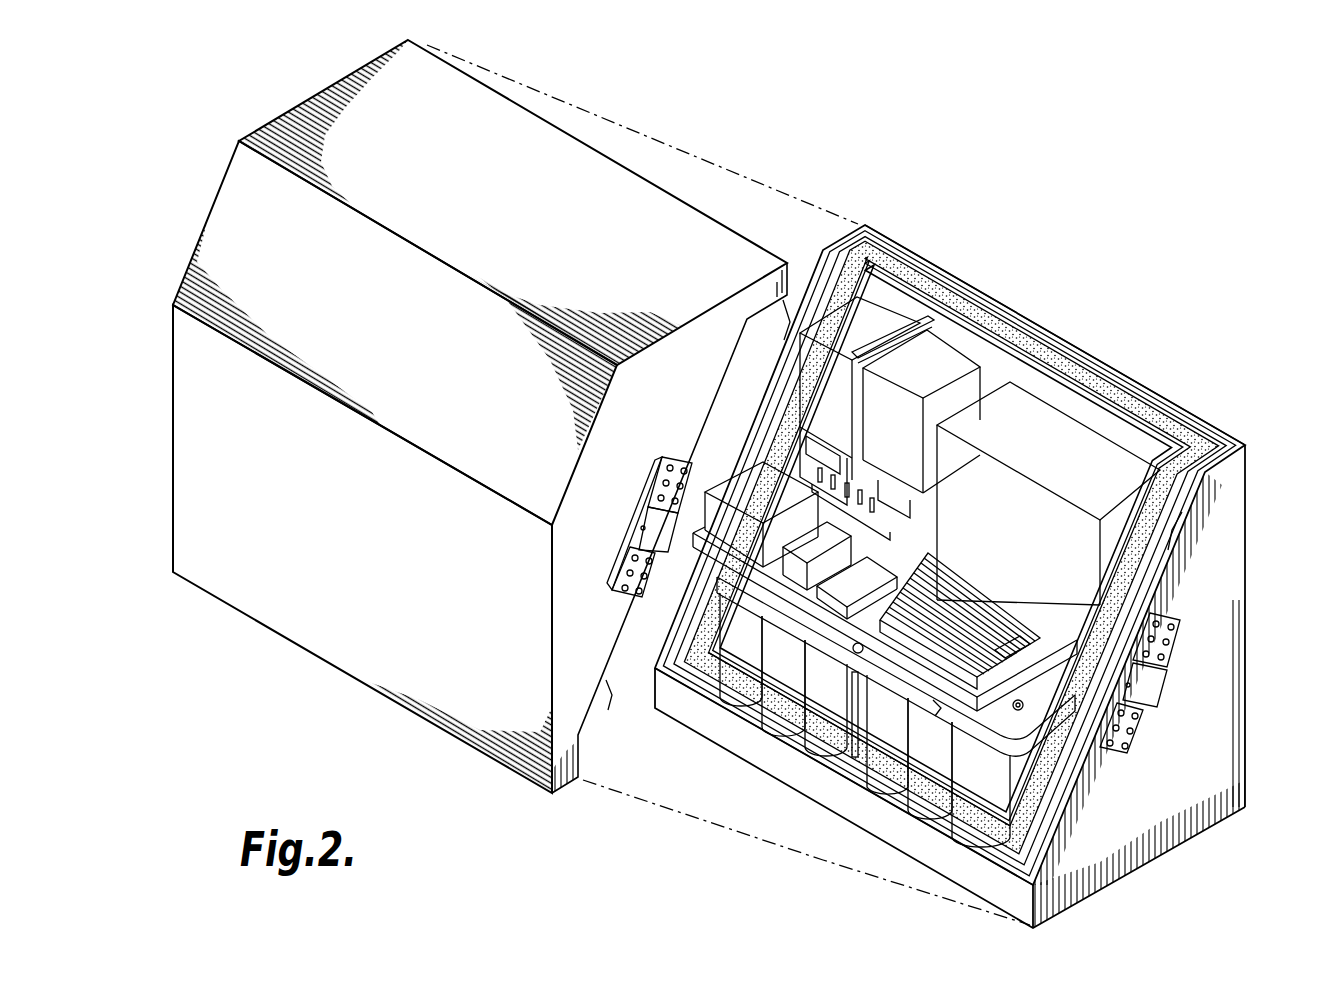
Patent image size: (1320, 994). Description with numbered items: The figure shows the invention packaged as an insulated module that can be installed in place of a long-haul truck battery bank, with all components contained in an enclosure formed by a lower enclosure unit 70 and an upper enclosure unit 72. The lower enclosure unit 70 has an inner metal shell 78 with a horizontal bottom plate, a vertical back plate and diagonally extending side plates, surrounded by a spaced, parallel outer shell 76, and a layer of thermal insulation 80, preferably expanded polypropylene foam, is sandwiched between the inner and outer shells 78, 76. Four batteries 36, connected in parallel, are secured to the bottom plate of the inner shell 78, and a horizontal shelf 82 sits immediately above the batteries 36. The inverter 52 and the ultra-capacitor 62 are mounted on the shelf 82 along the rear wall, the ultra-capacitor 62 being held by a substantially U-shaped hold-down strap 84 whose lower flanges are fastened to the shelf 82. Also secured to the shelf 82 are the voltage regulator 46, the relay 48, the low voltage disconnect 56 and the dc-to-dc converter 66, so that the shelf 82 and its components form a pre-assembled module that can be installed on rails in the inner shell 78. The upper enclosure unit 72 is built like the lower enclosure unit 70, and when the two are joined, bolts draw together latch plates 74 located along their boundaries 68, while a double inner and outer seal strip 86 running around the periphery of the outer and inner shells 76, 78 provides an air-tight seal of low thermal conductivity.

The batteries 36 is at (900, 770).
The voltage regulator 46 is at (742, 492).
The relay 48 is at (752, 682).
The inverter 52 is at (1060, 428).
The low voltage disconnect 56 is at (812, 582).
The ultra-capacitor 62 is at (882, 312).
The dc-to-dc converter 66 is at (940, 665).
The boundaries 68 is at (784, 330).
The lower enclosure unit 70 is at (1076, 338).
The upper enclosure unit 72 is at (630, 186).
The latch plates 74 is at (664, 566).
The outer shell 76 is at (1075, 856).
The inner metal shell 78 is at (958, 840).
The thermal insulation 80 is at (992, 842).
The horizontal shelf 82 is at (930, 700).
The hold-down strap 84 is at (922, 326).
The seal strip 86 is at (1227, 445).